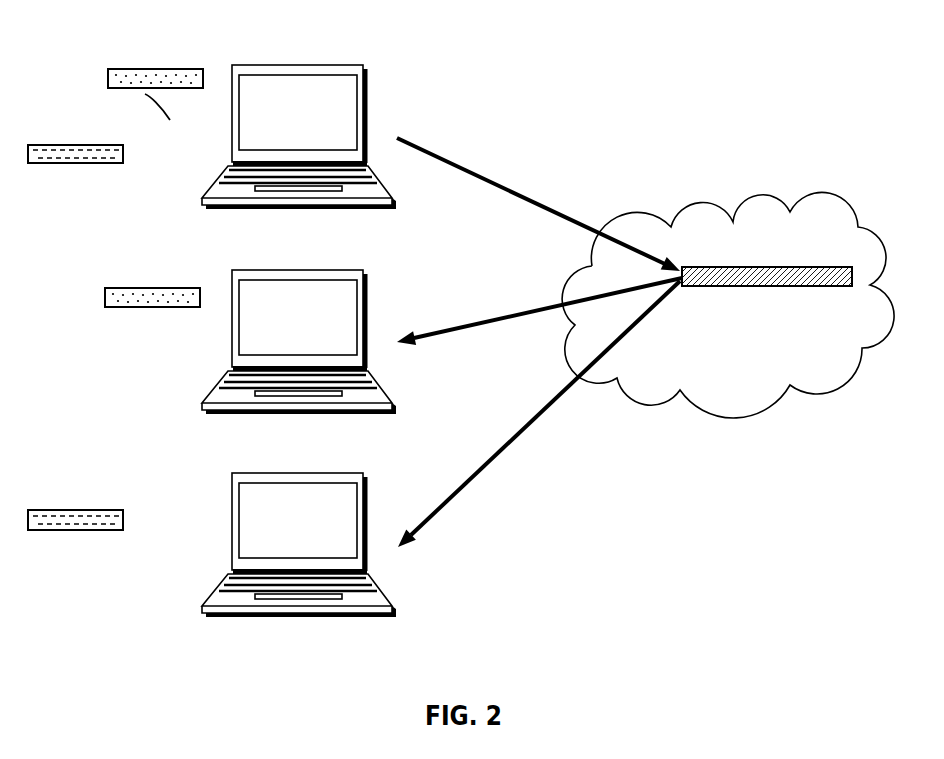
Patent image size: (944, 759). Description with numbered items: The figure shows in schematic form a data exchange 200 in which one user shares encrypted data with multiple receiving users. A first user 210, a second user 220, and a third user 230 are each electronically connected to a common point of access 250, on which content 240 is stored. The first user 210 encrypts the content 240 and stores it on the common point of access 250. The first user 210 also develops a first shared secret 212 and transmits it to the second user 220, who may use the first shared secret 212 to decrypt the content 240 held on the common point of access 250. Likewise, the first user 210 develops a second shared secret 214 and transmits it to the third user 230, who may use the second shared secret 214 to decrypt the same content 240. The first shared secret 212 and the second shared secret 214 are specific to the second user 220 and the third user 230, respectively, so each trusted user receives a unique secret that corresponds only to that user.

The data exchange 200 is at (461, 327).
The first user 210 is at (305, 58).
The second user 220 is at (327, 270).
The third user 230 is at (292, 470).
The first shared secret 212 is at (150, 287).
The second shared secret 214 is at (50, 172).
The content 240 is at (720, 253).
The common point of access 250 is at (775, 413).